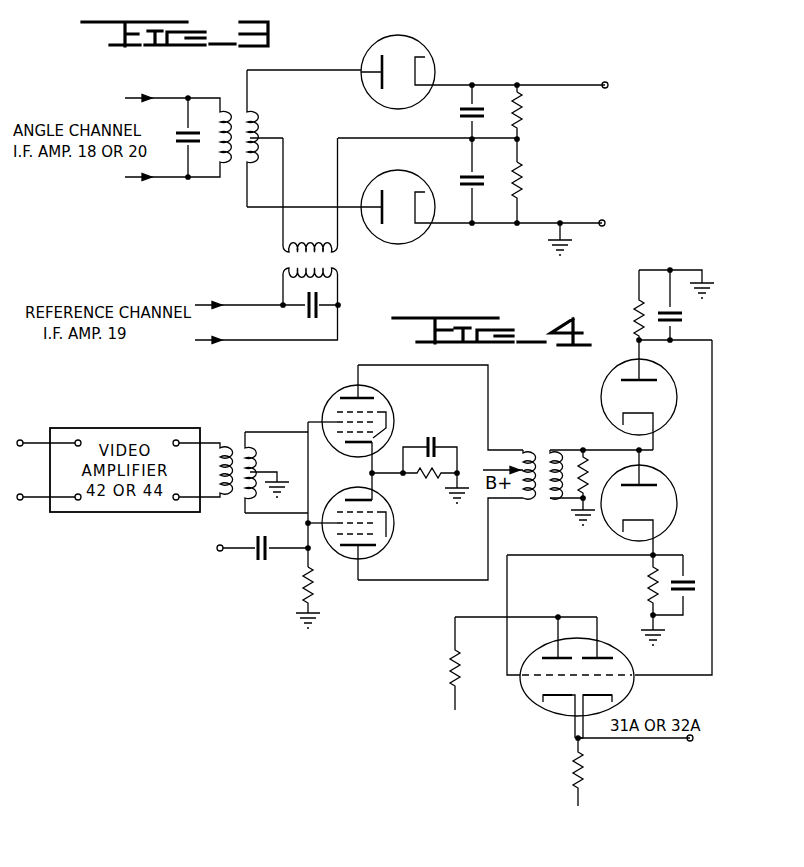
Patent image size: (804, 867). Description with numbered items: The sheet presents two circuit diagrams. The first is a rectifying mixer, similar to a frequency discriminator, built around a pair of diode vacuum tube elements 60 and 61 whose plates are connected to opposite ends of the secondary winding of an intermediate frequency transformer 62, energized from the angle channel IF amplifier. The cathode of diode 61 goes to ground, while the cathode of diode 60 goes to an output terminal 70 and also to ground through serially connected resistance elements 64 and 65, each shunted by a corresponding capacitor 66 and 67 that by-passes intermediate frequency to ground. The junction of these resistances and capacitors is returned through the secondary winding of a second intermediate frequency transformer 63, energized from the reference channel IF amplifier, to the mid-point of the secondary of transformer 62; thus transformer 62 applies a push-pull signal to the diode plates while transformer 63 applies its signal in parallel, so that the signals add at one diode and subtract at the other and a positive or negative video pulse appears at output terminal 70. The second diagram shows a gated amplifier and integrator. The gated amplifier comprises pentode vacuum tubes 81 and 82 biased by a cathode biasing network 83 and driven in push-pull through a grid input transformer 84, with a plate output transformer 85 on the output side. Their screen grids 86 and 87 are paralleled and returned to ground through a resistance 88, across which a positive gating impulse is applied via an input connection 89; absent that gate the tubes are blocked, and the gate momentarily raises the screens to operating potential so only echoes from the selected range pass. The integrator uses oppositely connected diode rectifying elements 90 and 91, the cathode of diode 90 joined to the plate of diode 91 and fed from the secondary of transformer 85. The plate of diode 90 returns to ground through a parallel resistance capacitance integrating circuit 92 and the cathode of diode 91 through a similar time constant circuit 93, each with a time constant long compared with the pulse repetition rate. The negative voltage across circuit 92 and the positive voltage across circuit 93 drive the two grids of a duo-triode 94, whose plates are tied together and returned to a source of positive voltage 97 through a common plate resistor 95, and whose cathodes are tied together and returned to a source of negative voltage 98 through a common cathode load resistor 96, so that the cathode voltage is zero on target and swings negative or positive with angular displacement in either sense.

In FIG. 3, the diode vacuum tube element 60 is at (429, 57).
In FIG. 3, the diode vacuum tube element 61 is at (426, 234).
In FIG. 3, the intermediate frequency transformer 62 is at (229, 114).
In FIG. 3, the intermediate frequency transformer 63 is at (335, 259).
In FIG. 3, the resistance element 64 is at (521, 114).
In FIG. 3, the resistance element 65 is at (521, 180).
In FIG. 3, the capacitor 66 is at (460, 112).
In FIG. 3, the capacitor 67 is at (460, 179).
In FIG. 3, the output terminal 70 is at (608, 85).
In FIG. 4, the pentode vacuum tube 81 is at (390, 409).
In FIG. 4, the pentode vacuum tube 82 is at (393, 548).
In FIG. 4, the cathode biasing network 83 is at (440, 452).
In FIG. 4, the grid input transformer 84 is at (232, 449).
In FIG. 4, the plate output transformer 85 is at (546, 458).
In FIG. 4, the screen grid 86 is at (315, 418).
In FIG. 4, the screen grid 87 is at (312, 521).
In FIG. 4, the resistance 88 is at (328, 586).
In FIG. 4, the input connection 89 is at (217, 549).
In FIG. 4, the diode rectifying element 90 is at (602, 395).
In FIG. 4, the diode rectifying element 91 is at (621, 533).
In FIG. 4, the parallel resistance capacitance integrating circuit 92 is at (634, 316).
In FIG. 4, the time constant circuit 93 is at (646, 590).
In FIG. 4, the duo-triode 94 is at (631, 670).
In FIG. 4, the common plate resistor 95 is at (459, 669).
In FIG. 4, the common cathode load resistor 96 is at (583, 779).
In FIG. 4, the source of predetermined positive voltage 97 is at (465, 728).
In FIG. 4, the source of negative voltage 98 is at (589, 823).